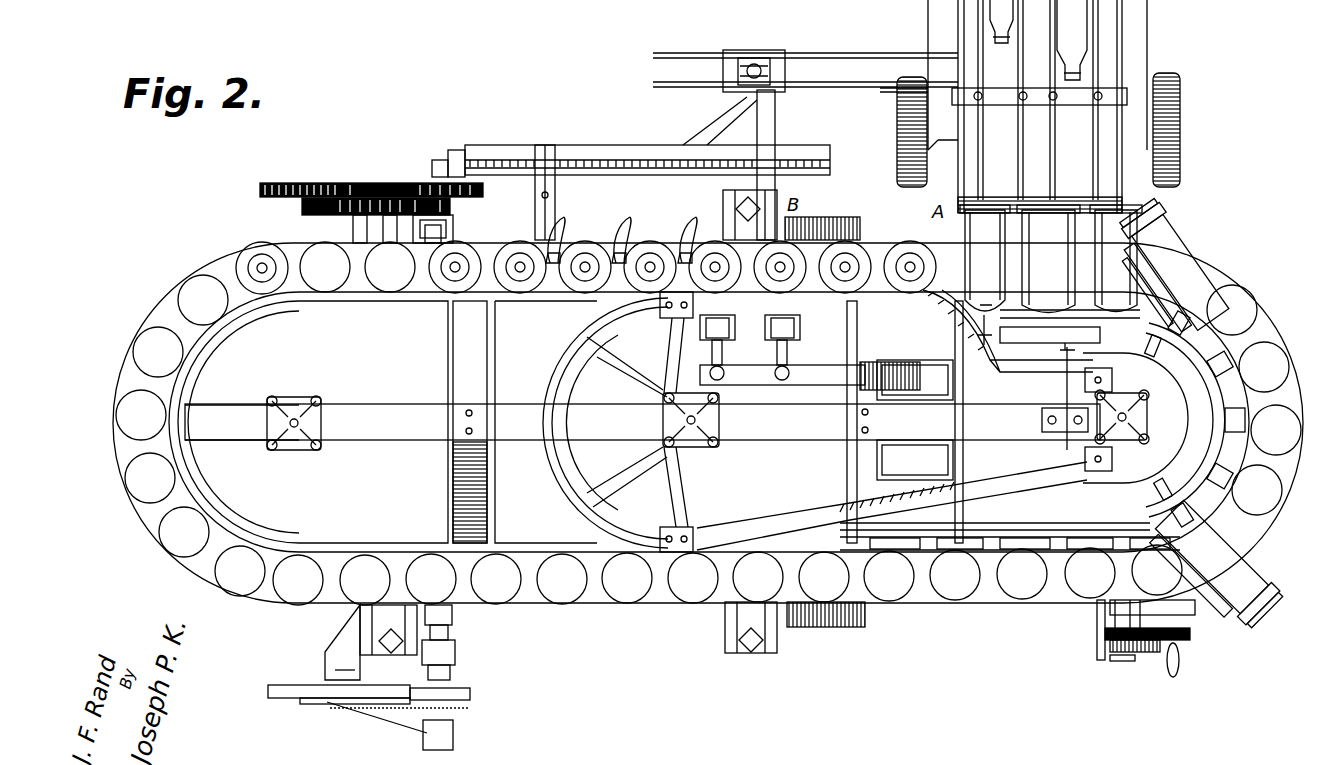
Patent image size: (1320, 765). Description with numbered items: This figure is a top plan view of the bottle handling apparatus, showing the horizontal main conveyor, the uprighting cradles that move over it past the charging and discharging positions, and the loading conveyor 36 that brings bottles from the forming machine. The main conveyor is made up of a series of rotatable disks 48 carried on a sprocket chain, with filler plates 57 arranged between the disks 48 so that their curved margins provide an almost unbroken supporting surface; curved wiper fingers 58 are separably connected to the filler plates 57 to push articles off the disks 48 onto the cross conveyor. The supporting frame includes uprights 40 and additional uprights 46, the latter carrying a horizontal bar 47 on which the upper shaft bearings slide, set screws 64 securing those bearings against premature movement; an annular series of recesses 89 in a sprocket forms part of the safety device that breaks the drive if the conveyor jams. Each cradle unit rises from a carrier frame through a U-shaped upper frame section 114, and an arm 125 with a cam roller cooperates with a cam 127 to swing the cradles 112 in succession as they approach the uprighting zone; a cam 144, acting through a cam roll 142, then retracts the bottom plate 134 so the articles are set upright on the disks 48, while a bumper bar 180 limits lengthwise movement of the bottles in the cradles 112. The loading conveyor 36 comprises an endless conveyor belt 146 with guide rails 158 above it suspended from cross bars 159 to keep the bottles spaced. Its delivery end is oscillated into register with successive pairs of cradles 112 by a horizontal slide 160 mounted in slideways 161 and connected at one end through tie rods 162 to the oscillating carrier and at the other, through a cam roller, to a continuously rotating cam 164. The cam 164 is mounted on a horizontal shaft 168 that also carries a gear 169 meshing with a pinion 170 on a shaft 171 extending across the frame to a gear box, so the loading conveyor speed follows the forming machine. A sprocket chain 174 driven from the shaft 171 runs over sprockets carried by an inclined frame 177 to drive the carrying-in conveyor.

The loading conveyor 36 is at (1164, 26).
The uprights 40 is at (723, 202).
The additional uprights 46 is at (458, 376).
The horizontal bar 47 is at (370, 418).
The rotatable disks 48 is at (246, 277).
The filler plates 57 is at (166, 304).
The wiper fingers 58 is at (572, 226).
The set screws 64 is at (293, 414).
The recesses 89 is at (1180, 660).
The cradle 112 is at (1143, 233).
The upper frame section 114 is at (1022, 540).
The arm 125 is at (1152, 357).
The cam 127 is at (810, 500).
The bottom plate 134 is at (1208, 226).
The cam roll 142 is at (778, 374).
The cam 144 is at (810, 378).
The endless conveyor belt 146 is at (1051, 241).
The guide rails 158 is at (1095, 145).
The cross bars 159 is at (1005, 90).
The horizontal slide 160 is at (455, 150).
The slideways 161 is at (815, 145).
The tie rods 162 is at (852, 80).
The cam 164 is at (380, 182).
The horizontal shaft 168 is at (355, 230).
The gear 169 is at (302, 212).
The pinion 170 is at (450, 209).
The shaft 171 is at (453, 224).
The sprocket chain 174 is at (470, 705).
The inclined frame 177 is at (292, 698).
The bumper bar 180 is at (1035, 343).